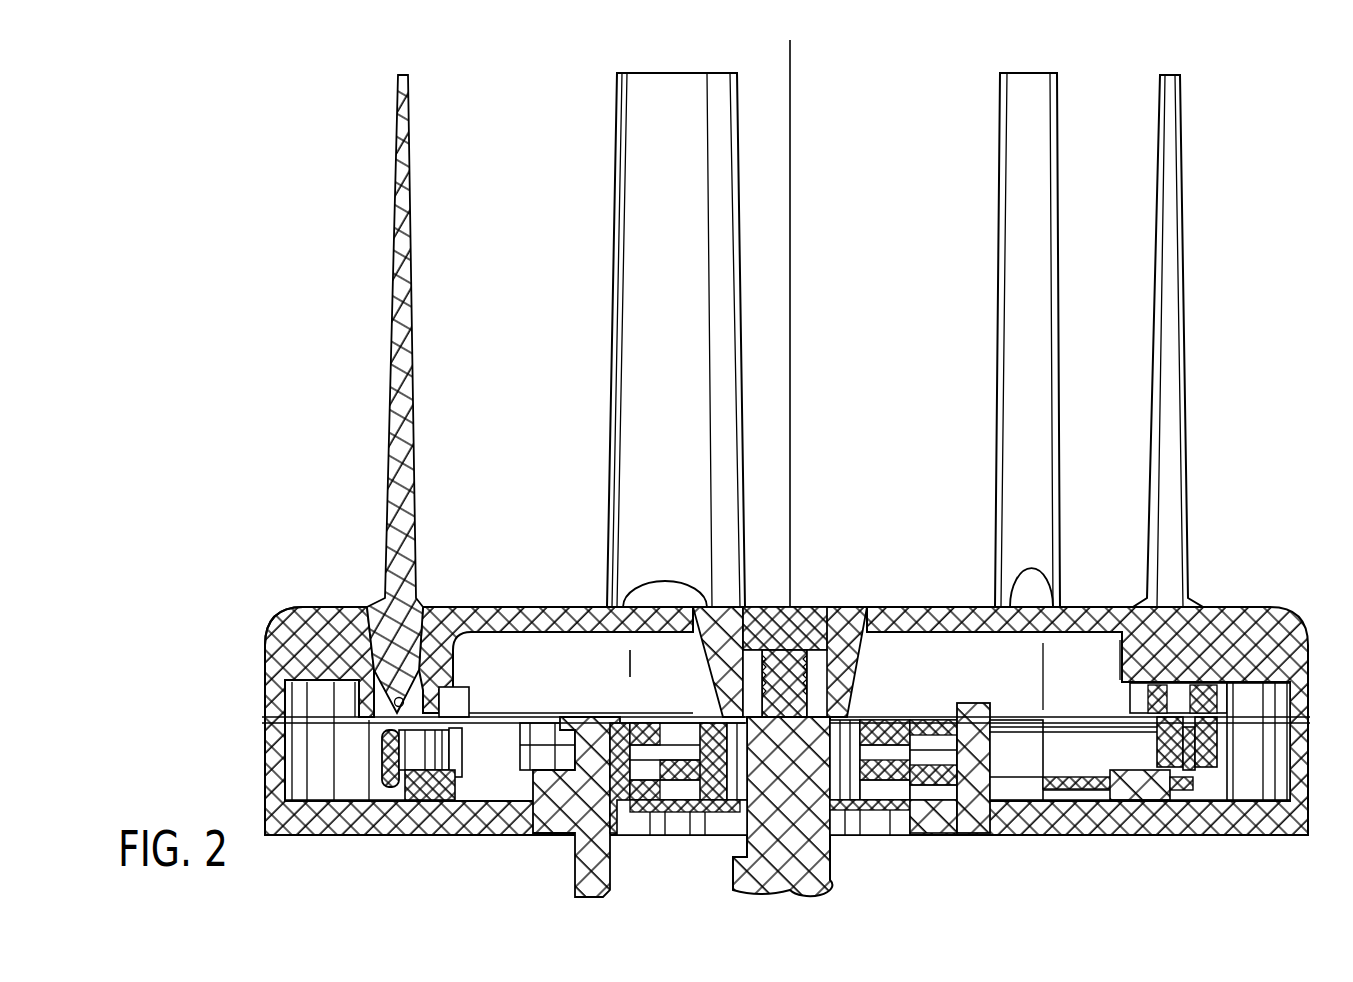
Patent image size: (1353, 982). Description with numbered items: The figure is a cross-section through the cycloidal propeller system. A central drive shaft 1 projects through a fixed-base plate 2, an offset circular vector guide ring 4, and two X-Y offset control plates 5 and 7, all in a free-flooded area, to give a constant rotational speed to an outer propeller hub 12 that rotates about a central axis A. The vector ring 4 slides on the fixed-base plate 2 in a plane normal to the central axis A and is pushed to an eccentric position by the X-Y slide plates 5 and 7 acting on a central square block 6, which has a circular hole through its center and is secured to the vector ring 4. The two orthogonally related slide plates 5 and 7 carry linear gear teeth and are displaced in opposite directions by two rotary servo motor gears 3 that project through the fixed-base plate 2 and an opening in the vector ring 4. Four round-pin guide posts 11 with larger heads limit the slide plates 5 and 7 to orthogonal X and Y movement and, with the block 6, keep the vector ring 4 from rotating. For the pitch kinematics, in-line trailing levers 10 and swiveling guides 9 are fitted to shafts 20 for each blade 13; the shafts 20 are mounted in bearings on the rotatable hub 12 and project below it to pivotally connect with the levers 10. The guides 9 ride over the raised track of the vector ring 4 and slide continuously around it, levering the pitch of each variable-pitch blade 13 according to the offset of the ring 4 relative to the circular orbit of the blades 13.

The central drive shaft 1 is at (745, 882).
The fixed-base plate 2 is at (266, 760).
The rotary servo motor gears 3 is at (600, 717).
The vector guide ring 4 is at (382, 758).
The X slide plate 5 is at (905, 715).
The central square block 6 is at (698, 712).
The Y slide plate 7 is at (1016, 719).
The swiveling guides 9 is at (449, 752).
The in-line trailing levers 10 is at (352, 698).
The round-pin guide posts 11 is at (1020, 716).
The outer propeller hub 12 is at (268, 692).
The propeller blade 13 is at (386, 558).
The blade shafts 20 is at (440, 689).
The central axis A is at (790, 273).